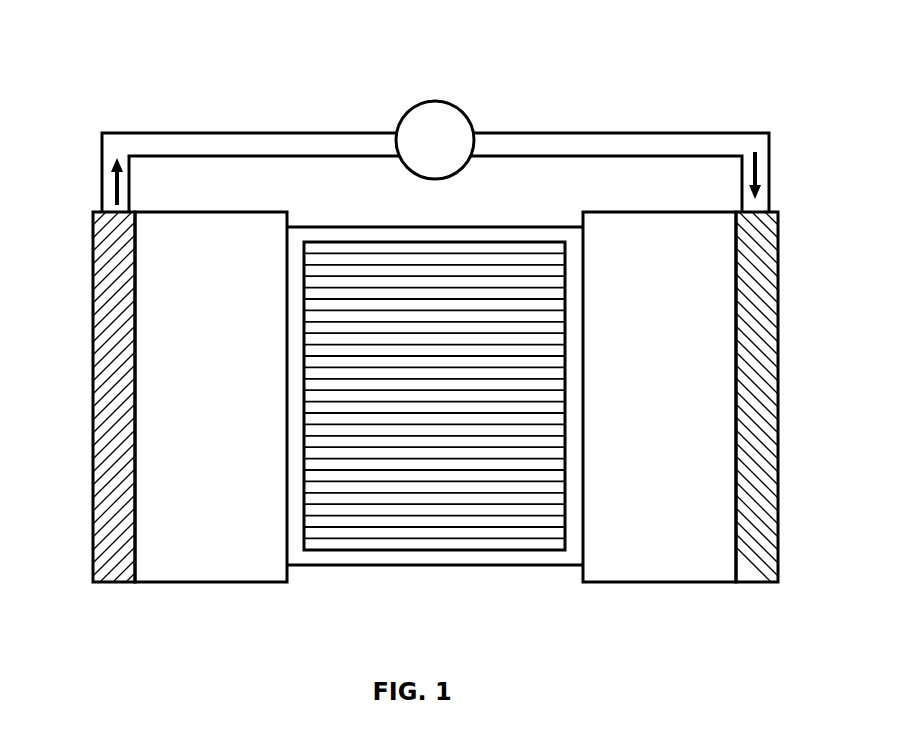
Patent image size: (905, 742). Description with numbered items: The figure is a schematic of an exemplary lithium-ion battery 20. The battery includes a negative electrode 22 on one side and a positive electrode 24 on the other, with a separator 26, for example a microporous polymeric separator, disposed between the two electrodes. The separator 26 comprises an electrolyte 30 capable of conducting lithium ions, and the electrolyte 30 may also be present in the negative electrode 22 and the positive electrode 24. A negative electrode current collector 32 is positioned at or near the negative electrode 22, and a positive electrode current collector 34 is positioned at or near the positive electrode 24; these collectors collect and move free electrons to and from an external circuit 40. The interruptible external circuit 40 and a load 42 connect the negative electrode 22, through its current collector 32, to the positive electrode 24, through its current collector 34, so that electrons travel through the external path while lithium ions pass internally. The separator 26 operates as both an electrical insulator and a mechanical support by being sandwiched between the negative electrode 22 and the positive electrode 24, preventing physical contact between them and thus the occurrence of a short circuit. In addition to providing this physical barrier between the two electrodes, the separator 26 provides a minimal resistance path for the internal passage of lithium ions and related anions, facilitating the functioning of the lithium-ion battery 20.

The lithium-ion battery 20 is at (98, 74).
The negative electrode 22 is at (196, 367).
The positive electrode 24 is at (647, 362).
The separator 26 is at (432, 565).
The electrolyte 30 is at (423, 393).
The negative electrode current collector 32 is at (92, 293).
The positive electrode current collector 34 is at (780, 288).
The external circuit 40 is at (250, 132).
The load 42 is at (423, 152).